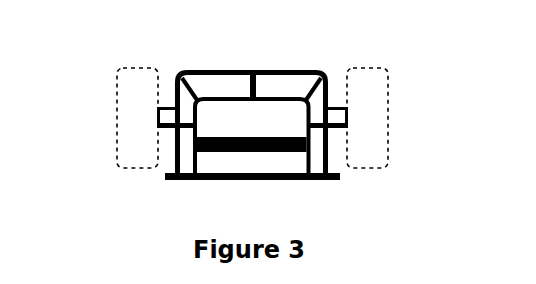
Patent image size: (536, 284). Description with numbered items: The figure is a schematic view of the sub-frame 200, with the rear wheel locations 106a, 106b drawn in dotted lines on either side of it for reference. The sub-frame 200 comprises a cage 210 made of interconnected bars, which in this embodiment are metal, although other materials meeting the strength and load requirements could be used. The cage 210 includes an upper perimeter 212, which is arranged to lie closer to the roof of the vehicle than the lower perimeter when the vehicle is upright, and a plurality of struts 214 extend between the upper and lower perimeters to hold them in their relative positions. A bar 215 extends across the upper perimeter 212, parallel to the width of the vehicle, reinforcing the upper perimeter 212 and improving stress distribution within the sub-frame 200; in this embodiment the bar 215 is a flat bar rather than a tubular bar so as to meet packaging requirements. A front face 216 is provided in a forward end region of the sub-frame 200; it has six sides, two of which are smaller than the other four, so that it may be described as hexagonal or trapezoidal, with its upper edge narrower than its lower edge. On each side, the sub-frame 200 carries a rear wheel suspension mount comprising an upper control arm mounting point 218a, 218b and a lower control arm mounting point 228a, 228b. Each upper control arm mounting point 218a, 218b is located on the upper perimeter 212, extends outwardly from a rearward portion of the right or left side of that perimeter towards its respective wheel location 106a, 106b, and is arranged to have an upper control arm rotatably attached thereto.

The sub-frame 200 is at (143, 48).
The rear wheel location 106a is at (117, 161).
The rear wheel location 106b is at (390, 143).
The cage 210 is at (297, 72).
The upper perimeter 212 is at (310, 163).
The struts 214 is at (188, 100).
The bar 215 is at (253, 152).
The front face 216 is at (213, 180).
The upper control arm mounting point 218a is at (175, 127).
The upper control arm mounting point 218b is at (332, 130).
The lower control arm mounting point 228a is at (170, 107).
The lower control arm mounting point 228b is at (335, 107).